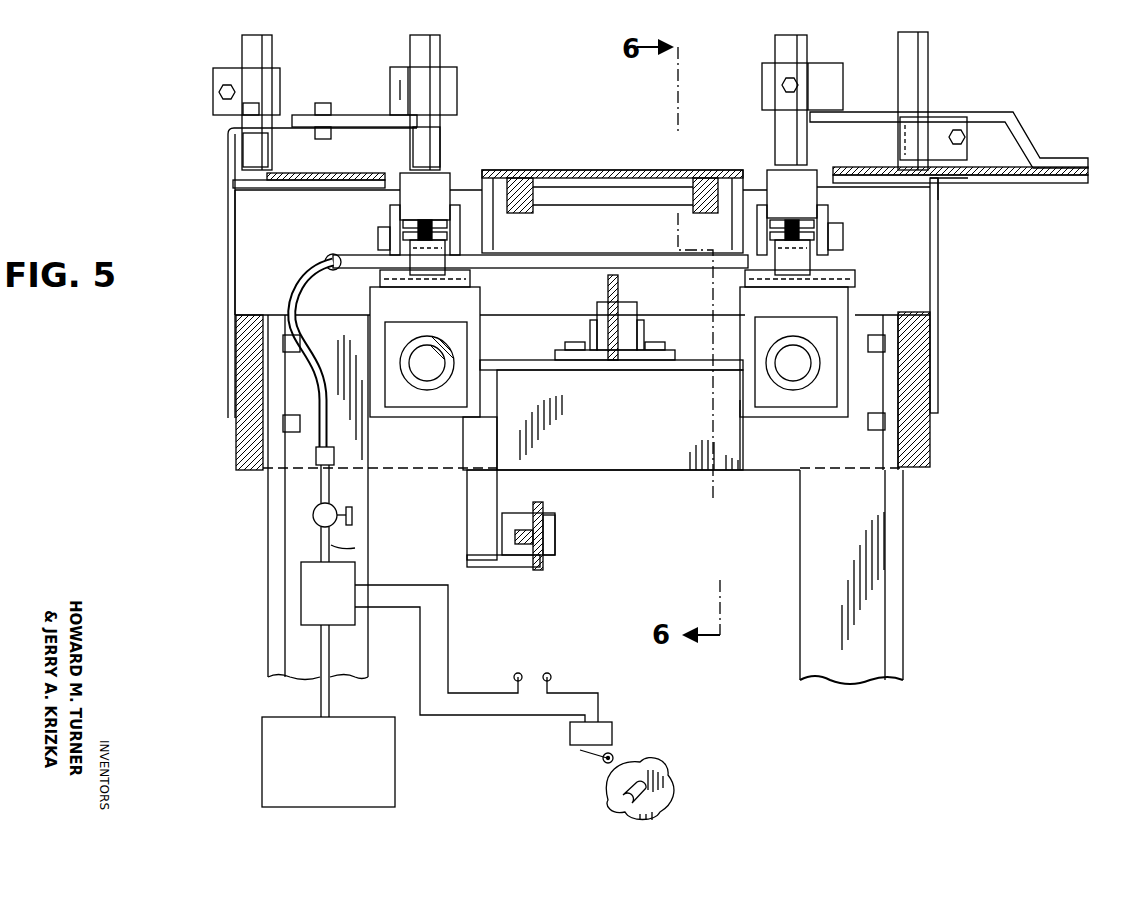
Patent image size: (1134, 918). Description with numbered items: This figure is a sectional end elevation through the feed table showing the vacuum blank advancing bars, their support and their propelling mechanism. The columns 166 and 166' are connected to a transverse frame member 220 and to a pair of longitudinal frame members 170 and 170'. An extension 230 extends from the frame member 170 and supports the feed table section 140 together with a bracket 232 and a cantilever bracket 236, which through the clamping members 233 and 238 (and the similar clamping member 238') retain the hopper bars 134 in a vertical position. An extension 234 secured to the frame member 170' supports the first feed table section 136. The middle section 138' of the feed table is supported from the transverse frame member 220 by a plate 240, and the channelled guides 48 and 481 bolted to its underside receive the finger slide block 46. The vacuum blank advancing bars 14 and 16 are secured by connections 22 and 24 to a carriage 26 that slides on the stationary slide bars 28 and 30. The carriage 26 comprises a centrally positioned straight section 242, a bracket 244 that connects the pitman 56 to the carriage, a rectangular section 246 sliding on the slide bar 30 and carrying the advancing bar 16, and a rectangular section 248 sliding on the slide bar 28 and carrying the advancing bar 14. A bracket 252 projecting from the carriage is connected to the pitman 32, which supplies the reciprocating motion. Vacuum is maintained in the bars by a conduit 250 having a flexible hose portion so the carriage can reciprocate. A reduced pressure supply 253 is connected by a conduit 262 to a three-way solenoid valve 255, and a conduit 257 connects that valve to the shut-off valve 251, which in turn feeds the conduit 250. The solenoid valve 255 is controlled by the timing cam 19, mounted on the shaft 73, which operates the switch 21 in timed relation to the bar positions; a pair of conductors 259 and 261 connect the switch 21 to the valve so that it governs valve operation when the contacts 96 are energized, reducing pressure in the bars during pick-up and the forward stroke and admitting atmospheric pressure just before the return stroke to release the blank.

The hopper bars 134 is at (272, 50).
The clamping member 233 is at (281, 97).
The clamping member 238 is at (828, 86).
The clamp block 238' is at (459, 91).
The cantilever bracket 236 is at (400, 120).
The section of the feed table 140 is at (340, 173).
The first section of the feed table 136 is at (862, 172).
The plate 240 is at (484, 185).
The top plate 138' is at (612, 155).
The bearing insert 481 is at (510, 213).
The channelled guide 48 is at (720, 222).
The finger slide block 46 is at (628, 207).
The vacuum blank advancing bar 16 is at (398, 200).
The connection 24 is at (376, 238).
The vacuum blank advancing bar 14 is at (820, 197).
The connection 22 is at (845, 240).
The conduit 250 is at (296, 288).
The slide bar 30 is at (425, 395).
The slide bar 28 is at (790, 395).
The pitman 56 is at (620, 292).
The bracket 244 is at (645, 330).
The straight section 242 is at (722, 372).
The carriage 26 is at (605, 378).
The rectangular section 248 is at (742, 415).
The transverse frame member 220 is at (698, 472).
The rectangular section 246 is at (400, 420).
The bracket 252 is at (467, 500).
The pitman 32 is at (540, 570).
The extension 230 is at (227, 288).
The longitudinal frame member 170 is at (211, 395).
The longitudinal frame member 170' is at (951, 389).
The extension 234 is at (940, 275).
The bracket 232 is at (965, 170).
The column 166 is at (284, 497).
The column 166' is at (892, 499).
The shut-off valve 251 is at (355, 525).
The conduit 257 is at (355, 548).
The three-way solenoid valve 255 is at (301, 615).
The conduit 262 is at (320, 697).
The reduced pressure supply 253 is at (262, 768).
The conductor 261 is at (448, 645).
The contacts 96 is at (533, 662).
The conductor 259 is at (466, 715).
The switch 21 is at (612, 732).
The shaft 73 is at (625, 790).
The timing cam 19 is at (670, 790).